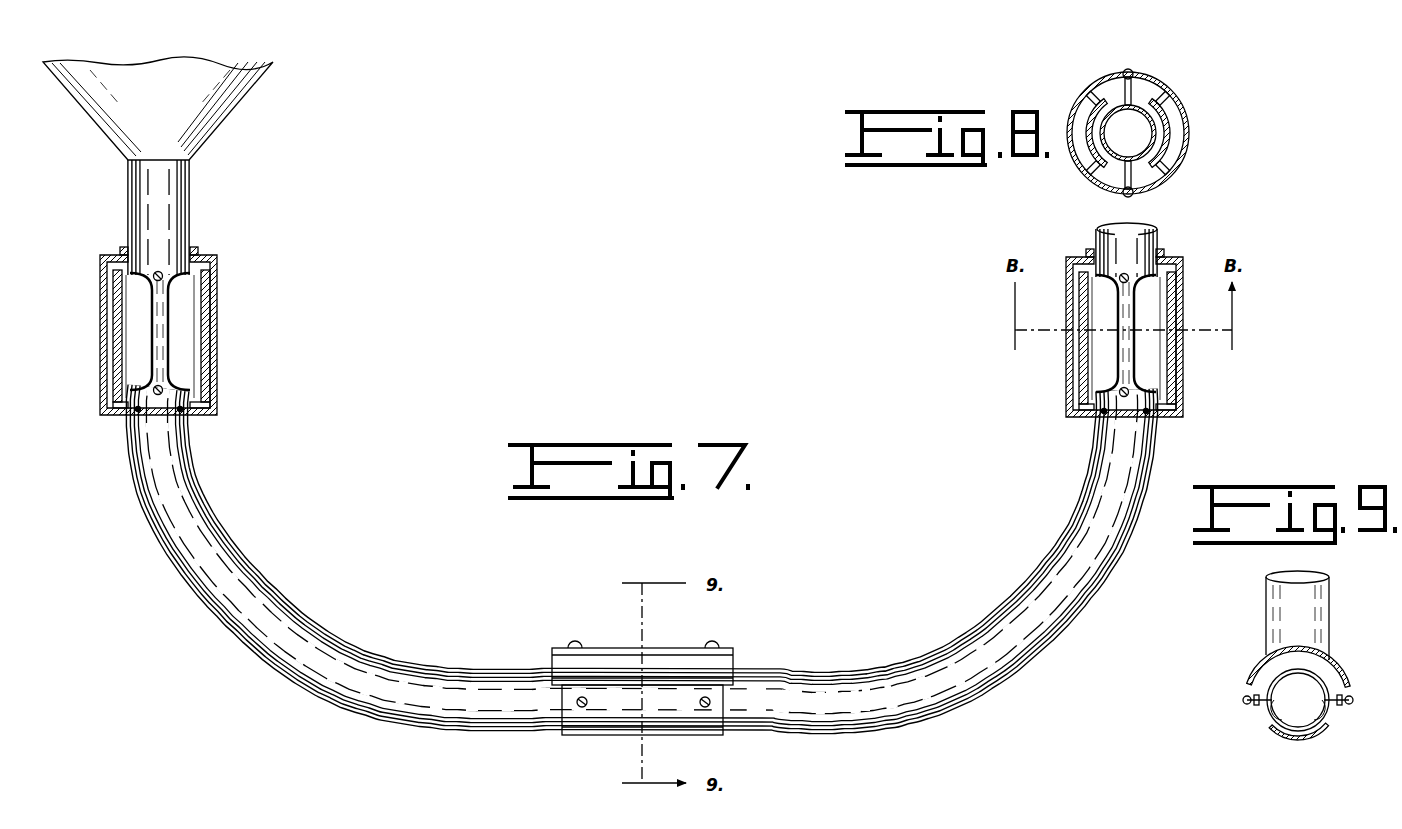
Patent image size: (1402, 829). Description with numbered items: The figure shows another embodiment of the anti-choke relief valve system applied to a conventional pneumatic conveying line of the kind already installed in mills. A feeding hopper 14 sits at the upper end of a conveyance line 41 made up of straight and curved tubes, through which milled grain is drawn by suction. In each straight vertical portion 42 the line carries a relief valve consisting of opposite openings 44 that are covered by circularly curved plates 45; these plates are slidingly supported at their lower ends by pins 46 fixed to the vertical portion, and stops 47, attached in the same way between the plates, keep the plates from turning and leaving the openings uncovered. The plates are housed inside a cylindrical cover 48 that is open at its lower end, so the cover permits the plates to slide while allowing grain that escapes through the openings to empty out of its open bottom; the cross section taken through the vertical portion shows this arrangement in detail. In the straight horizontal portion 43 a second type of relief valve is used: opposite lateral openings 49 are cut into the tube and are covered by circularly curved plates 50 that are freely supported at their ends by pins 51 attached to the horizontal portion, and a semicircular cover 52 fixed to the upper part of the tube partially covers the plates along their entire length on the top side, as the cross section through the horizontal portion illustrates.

In FIG. 7, the feeding hopper 14 is at (212, 125).
In FIG. 7, the conveyance line 41 is at (294, 602).
In FIG. 7, the straight vertical portion 42 is at (178, 187).
In FIG. 7, the straight horizontal portion 43 is at (841, 713).
In FIG. 7, the opposite openings 44 is at (177, 305).
In FIG. 8, the opposite openings 44 is at (1146, 136).
In FIG. 7, the circularly curved plates 45 is at (122, 252).
In FIG. 7, the pins 46 is at (176, 414).
In FIG. 8, the pins 46 is at (1092, 106).
In FIG. 7, the stops 47 is at (163, 273).
In FIG. 8, the stops 47 is at (1122, 90).
In FIG. 7, the cylindrical cover 48 is at (104, 403).
In FIG. 8, the cylindrical cover 48 is at (1152, 86).
In FIG. 9, the opposite lateral openings 49 is at (1298, 729).
In FIG. 7, the circularly curved plates 50 is at (610, 725).
In FIG. 9, the circularly curved plates 50 is at (1266, 679).
In FIG. 7, the pins 51 is at (583, 708).
In FIG. 9, the pins 51 is at (1350, 700).
In FIG. 7, the semicircular cover 52 is at (668, 660).
In FIG. 9, the semicircular cover 52 is at (1323, 672).